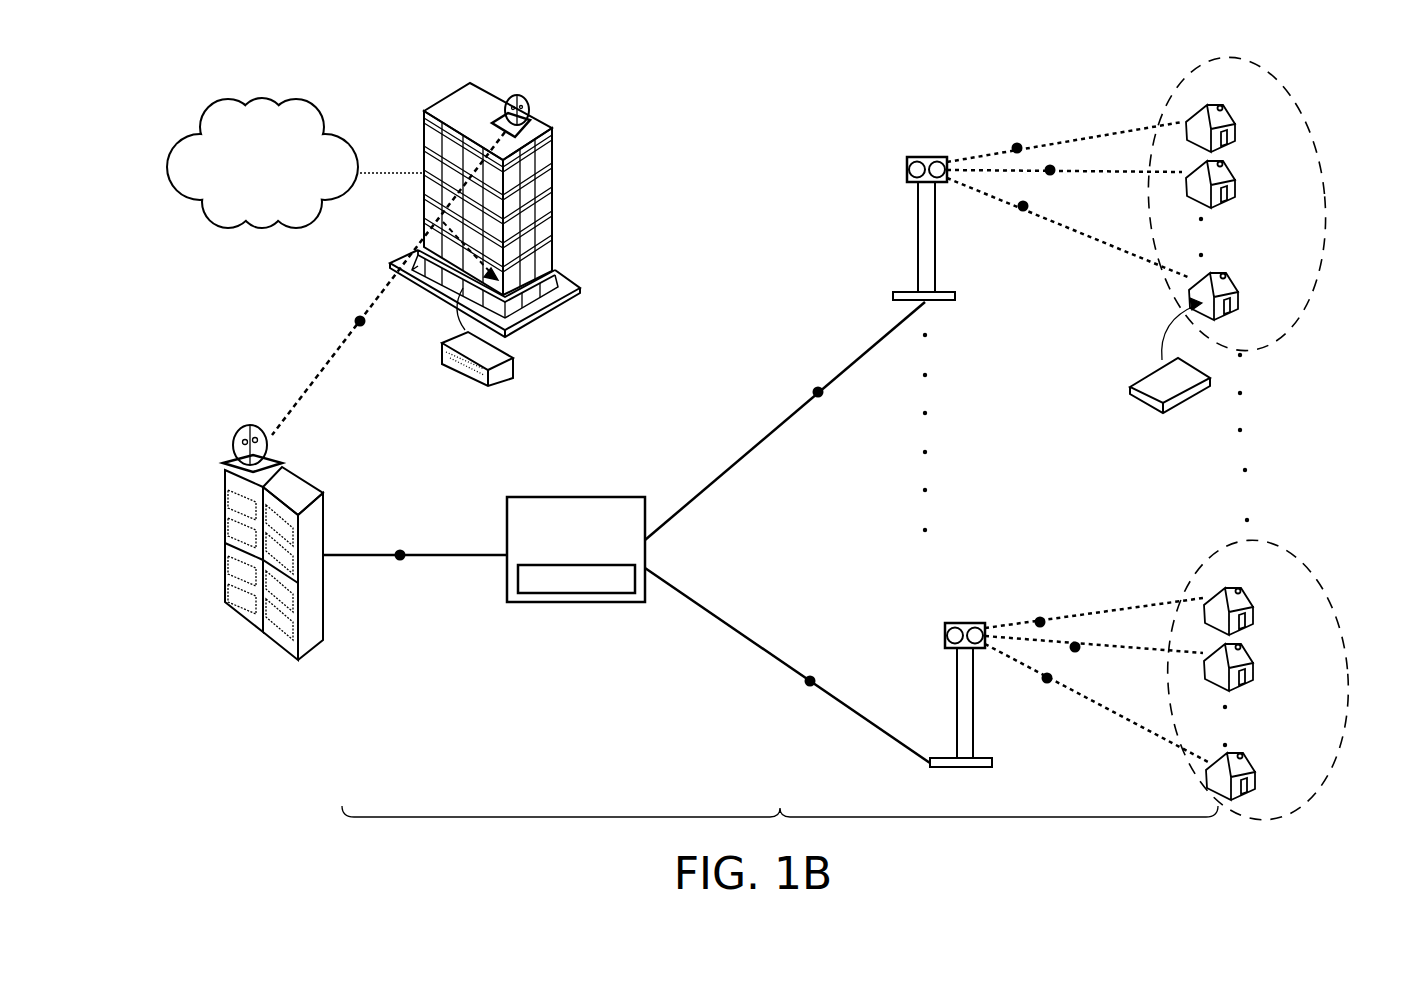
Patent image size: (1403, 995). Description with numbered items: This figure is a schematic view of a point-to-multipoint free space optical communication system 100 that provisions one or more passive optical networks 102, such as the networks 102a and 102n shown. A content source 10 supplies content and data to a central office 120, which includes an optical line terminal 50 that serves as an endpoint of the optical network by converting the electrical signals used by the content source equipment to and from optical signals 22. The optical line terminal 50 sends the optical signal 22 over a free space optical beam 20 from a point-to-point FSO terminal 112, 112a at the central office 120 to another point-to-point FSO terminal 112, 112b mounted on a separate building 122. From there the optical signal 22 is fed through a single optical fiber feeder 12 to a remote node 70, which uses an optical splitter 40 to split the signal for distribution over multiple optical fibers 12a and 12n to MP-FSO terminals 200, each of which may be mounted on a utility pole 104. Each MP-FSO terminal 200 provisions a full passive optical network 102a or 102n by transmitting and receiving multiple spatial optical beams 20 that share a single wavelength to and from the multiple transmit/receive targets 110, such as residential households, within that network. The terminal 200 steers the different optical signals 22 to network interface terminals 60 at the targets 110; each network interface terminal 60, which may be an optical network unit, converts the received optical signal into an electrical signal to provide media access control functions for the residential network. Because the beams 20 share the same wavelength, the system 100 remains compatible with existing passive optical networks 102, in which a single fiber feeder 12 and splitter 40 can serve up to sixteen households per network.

The content source 10 is at (253, 183).
The optical fiber feeder 12 is at (452, 557).
The optical fiber 12a is at (722, 472).
The optical fiber 12n is at (752, 639).
The free space optical beam 20 is at (327, 363).
The optical signal 22 is at (356, 316).
The optical splitter 40 is at (573, 624).
The optical line terminal 50 is at (472, 388).
The network interface terminal 60 is at (1105, 395).
The remote node 70 is at (583, 476).
The point-to-multipoint free space optical communication system 100 is at (893, 72).
The passive optical network 102 is at (780, 828).
The passive optical network 102a is at (1232, 40).
The passive optical network 102n is at (1278, 522).
The utility pole 104 is at (918, 255).
The transmit/receive target 110 is at (1236, 135).
The point-to-point FSO terminal 112 is at (376, 251).
The point-to-point FSO terminal 112a is at (513, 94).
The point-to-point FSO terminal 112b is at (250, 424).
The central office 120 is at (553, 127).
The building 122 is at (320, 507).
The MP-FSO terminal 200 is at (907, 152).